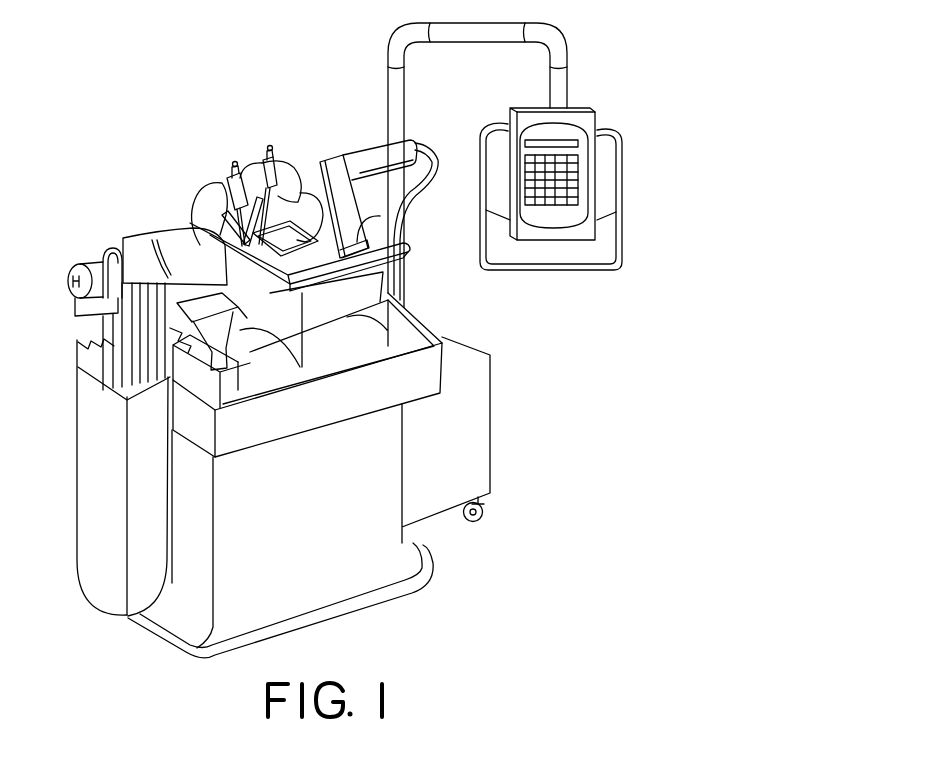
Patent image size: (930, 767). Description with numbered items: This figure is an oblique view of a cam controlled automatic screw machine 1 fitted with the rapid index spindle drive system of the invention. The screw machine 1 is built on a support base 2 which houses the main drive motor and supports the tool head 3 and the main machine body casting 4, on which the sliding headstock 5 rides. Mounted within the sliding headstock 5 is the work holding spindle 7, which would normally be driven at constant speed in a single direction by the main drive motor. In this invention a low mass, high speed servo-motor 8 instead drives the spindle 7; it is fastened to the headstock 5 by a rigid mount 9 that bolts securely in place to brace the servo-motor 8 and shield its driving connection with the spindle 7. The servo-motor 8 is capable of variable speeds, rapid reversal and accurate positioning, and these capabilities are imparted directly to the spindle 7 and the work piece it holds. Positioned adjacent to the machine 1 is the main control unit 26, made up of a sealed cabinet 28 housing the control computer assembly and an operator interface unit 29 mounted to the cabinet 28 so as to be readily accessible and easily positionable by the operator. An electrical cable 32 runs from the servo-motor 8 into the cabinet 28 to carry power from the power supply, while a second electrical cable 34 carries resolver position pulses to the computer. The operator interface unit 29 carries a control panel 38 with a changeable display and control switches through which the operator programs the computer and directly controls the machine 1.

The automatic screw machine 1 is at (120, 182).
The support base 2 is at (185, 587).
The tool head 3 is at (250, 163).
The main machine body casting 4 is at (400, 332).
The sliding headstock 5 is at (410, 246).
The work holding spindle 7 is at (303, 188).
The servo-motor 8 is at (373, 158).
The rigid mount 9 is at (343, 153).
The main control unit 26 is at (623, 325).
The cabinet 28 is at (483, 456).
The operator interface unit 29 is at (649, 183).
The electrical cable 32 is at (430, 148).
The electrical cable 34 is at (416, 183).
The control panel 38 is at (570, 132).